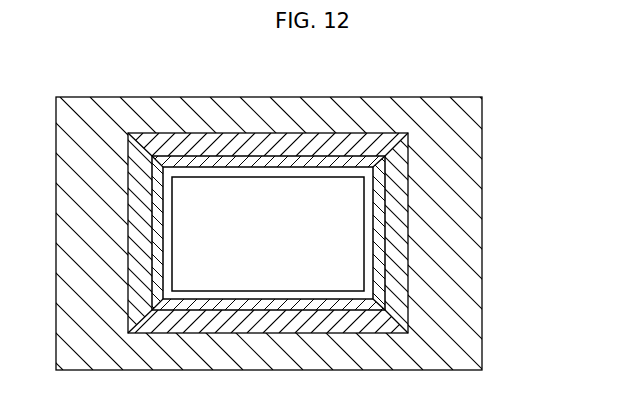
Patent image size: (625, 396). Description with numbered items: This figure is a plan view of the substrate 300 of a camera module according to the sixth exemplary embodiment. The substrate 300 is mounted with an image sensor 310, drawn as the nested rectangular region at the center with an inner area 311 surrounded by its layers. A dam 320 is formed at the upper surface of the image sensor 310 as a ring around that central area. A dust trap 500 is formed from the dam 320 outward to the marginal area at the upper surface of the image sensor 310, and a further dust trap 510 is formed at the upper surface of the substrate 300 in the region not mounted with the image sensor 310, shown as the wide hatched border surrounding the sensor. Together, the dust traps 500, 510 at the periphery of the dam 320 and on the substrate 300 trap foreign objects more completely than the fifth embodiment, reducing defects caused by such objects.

The substrate 300 is at (489, 153).
The image sensor 310 is at (408, 304).
The opening 311 is at (312, 186).
The dam 320 is at (383, 190).
The dust trap 500 is at (355, 148).
The dust trap 510 is at (462, 263).